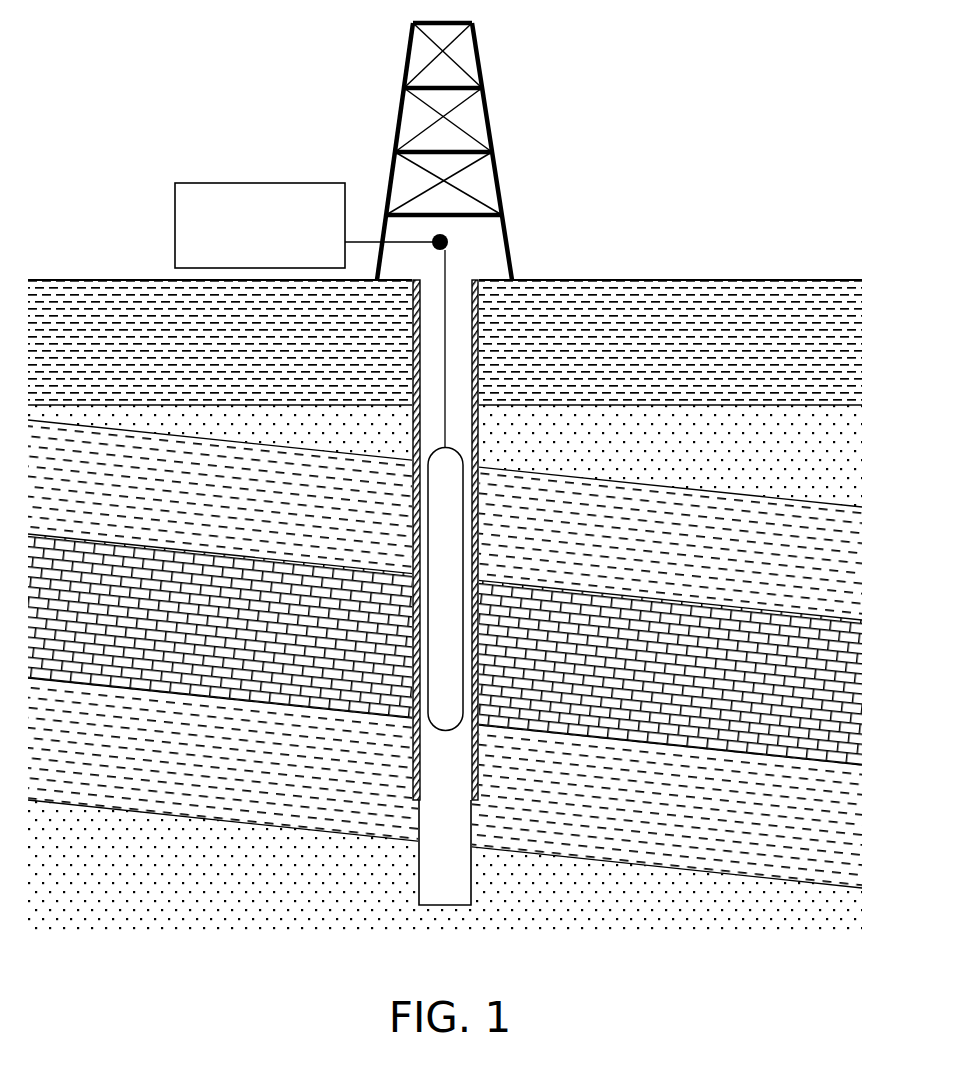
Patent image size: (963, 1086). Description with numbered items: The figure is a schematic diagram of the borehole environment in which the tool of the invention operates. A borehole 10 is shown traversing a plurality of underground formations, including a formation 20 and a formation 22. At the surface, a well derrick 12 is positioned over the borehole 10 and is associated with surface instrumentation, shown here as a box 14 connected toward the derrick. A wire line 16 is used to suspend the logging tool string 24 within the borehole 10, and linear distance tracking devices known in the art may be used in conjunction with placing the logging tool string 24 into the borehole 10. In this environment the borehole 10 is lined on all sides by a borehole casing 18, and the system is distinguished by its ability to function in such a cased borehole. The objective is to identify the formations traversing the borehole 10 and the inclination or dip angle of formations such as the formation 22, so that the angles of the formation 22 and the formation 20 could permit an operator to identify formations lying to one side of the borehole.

The borehole 10 is at (450, 481).
The well derrick 12 is at (499, 151).
The surface control unit 14 is at (262, 234).
The wire line 16 is at (349, 169).
The borehole casing 18 is at (575, 518).
The formation 20 is at (450, 520).
The formation 22 is at (450, 682).
The logging tool string 24 is at (520, 490).